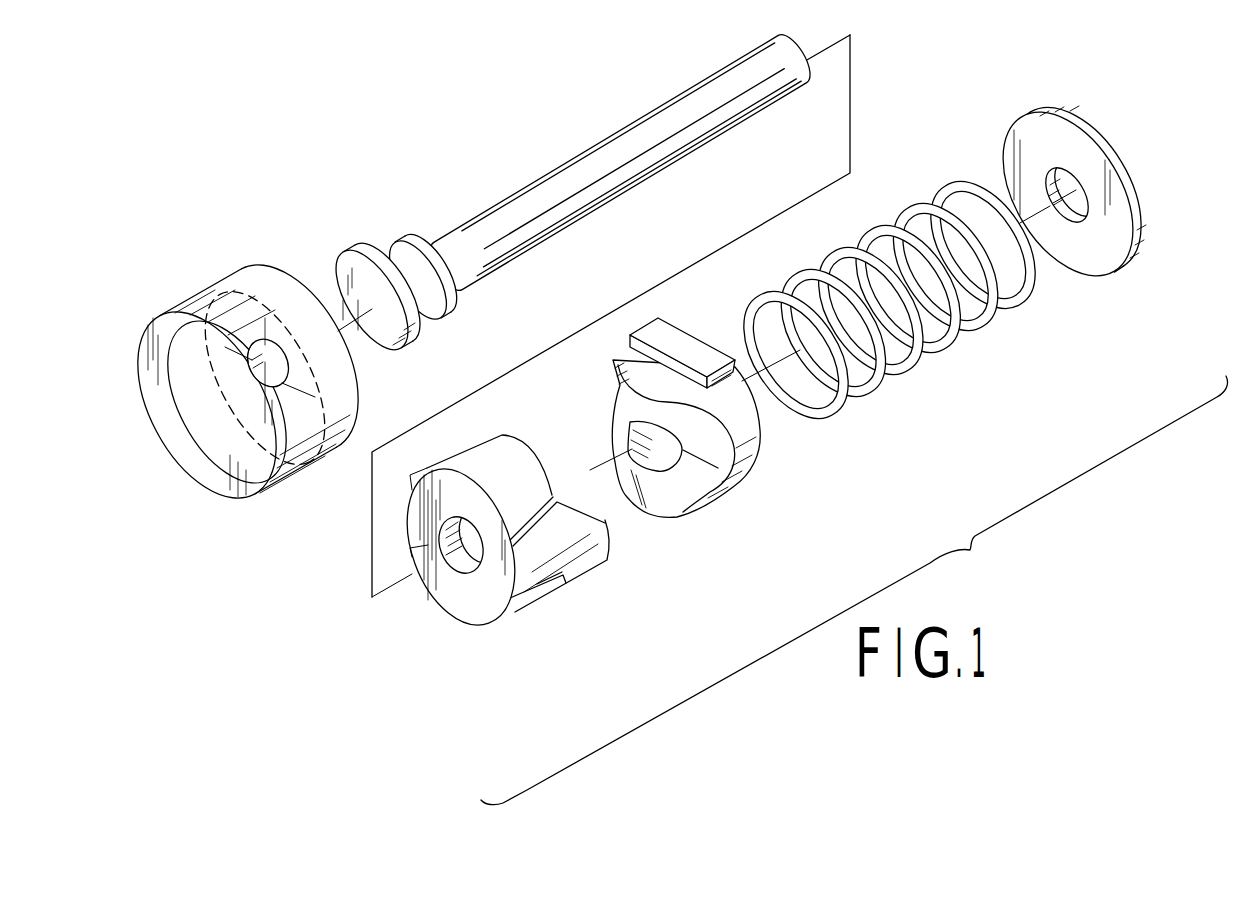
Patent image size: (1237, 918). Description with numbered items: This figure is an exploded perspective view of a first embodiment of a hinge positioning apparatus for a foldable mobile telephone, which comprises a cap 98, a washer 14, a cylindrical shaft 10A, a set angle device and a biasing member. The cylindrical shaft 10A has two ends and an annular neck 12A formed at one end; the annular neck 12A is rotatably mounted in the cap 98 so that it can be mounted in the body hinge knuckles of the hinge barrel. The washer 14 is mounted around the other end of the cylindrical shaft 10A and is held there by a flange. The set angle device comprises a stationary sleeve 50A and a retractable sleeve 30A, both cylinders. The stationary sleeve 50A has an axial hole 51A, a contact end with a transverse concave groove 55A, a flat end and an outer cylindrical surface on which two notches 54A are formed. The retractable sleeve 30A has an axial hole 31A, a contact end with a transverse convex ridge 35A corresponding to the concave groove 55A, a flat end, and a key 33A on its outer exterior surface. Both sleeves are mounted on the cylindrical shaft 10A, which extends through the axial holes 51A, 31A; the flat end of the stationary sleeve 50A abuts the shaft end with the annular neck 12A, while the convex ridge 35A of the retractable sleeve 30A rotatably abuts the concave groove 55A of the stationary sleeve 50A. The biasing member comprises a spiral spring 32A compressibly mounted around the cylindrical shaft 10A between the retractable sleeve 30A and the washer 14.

The cap 98 is at (219, 270).
The annular neck 12A is at (407, 256).
The cylindrical shaft 10A is at (493, 207).
The washer 14 is at (1049, 105).
The spiral spring 32A is at (924, 192).
The key 33A is at (688, 336).
The retractable sleeve 30A is at (727, 439).
The transverse convex ridge 35A is at (707, 490).
The axial hole 31A is at (663, 462).
The transverse concave groove 55A is at (604, 534).
The axial hole 51A is at (465, 567).
The notches 54A is at (537, 584).
The stationary sleeve 50A is at (521, 573).